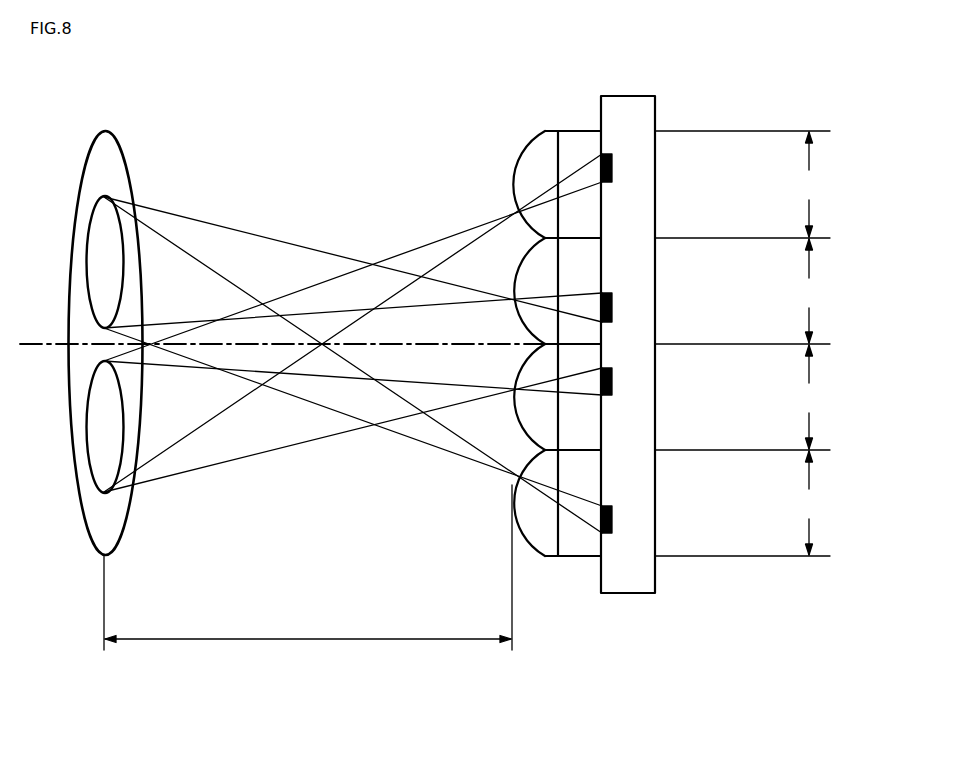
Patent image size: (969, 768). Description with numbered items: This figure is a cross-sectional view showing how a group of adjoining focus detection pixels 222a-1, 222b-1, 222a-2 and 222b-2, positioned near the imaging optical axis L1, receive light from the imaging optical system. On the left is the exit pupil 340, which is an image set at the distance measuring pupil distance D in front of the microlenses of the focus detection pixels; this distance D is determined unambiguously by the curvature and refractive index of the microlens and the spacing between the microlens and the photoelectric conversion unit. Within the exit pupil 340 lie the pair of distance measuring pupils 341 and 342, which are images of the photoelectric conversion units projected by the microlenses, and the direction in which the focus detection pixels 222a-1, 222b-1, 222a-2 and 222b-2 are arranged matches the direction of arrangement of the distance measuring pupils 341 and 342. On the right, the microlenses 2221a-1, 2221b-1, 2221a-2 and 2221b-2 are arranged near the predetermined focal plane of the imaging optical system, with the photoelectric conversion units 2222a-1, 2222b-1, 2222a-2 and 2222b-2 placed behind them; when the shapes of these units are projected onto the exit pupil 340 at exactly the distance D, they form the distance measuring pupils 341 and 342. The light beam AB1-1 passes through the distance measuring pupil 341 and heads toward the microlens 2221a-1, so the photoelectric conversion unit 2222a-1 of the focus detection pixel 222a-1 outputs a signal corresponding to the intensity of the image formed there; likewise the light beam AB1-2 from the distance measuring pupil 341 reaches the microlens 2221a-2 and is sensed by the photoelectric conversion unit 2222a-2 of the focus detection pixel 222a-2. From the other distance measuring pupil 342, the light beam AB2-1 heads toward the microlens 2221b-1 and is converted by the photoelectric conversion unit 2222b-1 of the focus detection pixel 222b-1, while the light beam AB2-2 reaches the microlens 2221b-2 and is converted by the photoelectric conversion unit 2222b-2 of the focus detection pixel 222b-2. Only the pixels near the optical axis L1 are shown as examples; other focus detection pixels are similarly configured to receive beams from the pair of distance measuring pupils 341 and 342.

The exit pupil 340 is at (112, 144).
The distance measuring pupil 342 is at (95, 261).
The distance measuring pupil 341 is at (95, 430).
The optical axis L1 is at (24, 345).
The light beam AB2-1 is at (301, 240).
The light beam AB1-1 is at (426, 242).
The light beam AB1-2 is at (297, 446).
The light beam AB2-2 is at (389, 432).
The microlens 2221a-1 is at (537, 146).
The microlens 2221b-1 is at (531, 323).
The microlens 2221a-2 is at (529, 367).
The microlens 2221b-2 is at (533, 542).
The photoelectric conversion unit 2222a-1 is at (612, 168).
The photoelectric conversion unit 2222b-1 is at (612, 307).
The photoelectric conversion unit 2222a-2 is at (612, 381).
The photoelectric conversion unit 2222b-2 is at (612, 519).
The focus detection pixel 222a-1 is at (745, 184).
The focus detection pixel 222b-1 is at (746, 291).
The focus detection pixel 222a-2 is at (745, 397).
The focus detection pixel 222b-2 is at (746, 503).
The distance measuring pupil distance D is at (308, 567).